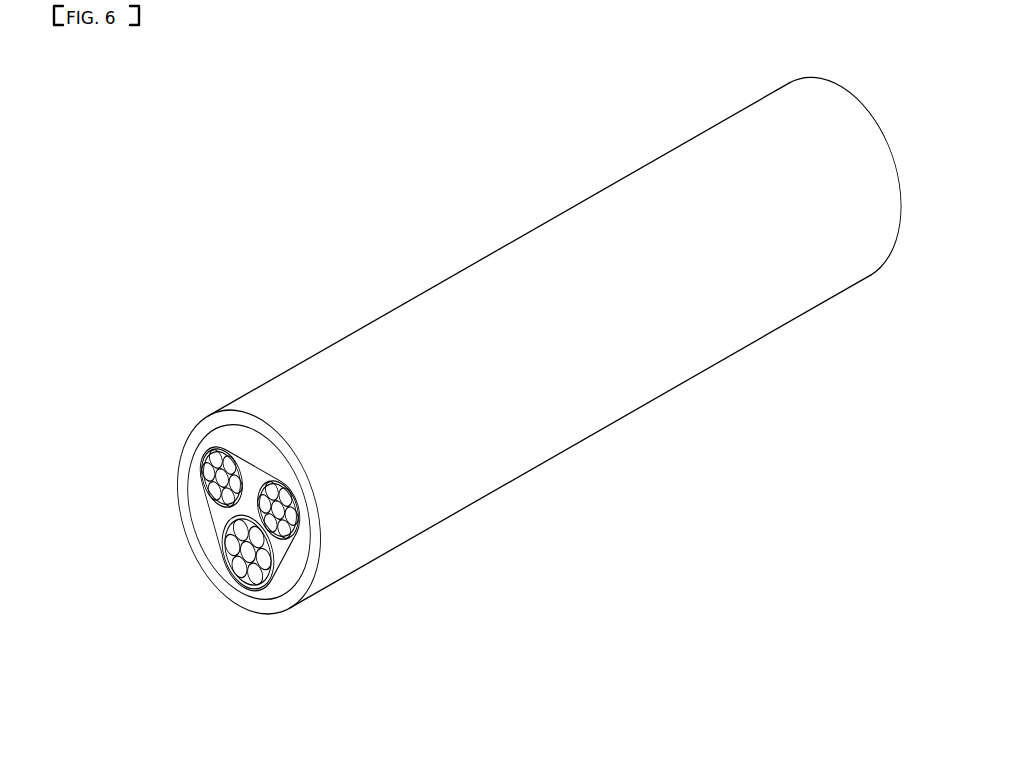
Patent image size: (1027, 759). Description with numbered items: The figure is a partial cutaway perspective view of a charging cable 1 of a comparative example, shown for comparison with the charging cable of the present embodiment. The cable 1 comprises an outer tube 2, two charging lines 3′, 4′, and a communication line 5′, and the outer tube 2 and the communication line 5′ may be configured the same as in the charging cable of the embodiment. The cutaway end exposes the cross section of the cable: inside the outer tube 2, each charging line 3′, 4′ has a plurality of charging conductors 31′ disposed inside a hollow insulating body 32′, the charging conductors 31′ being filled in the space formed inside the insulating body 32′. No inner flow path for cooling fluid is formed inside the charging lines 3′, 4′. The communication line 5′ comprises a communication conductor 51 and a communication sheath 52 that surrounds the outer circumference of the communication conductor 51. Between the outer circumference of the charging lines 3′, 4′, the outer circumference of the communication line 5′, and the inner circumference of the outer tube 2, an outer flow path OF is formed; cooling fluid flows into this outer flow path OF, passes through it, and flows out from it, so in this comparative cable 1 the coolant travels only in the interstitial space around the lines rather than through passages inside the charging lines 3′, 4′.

The cable 1 is at (470, 207).
The outer tube 2 is at (528, 457).
The charging line 3′ is at (228, 432).
The charging conductors 31′ is at (266, 488).
The insulating body 32′ is at (282, 483).
The charging line 4′ is at (320, 532).
The binder wrap 5′ is at (294, 578).
The communication conductor 51 is at (245, 570).
The communication sheath 52 is at (235, 567).
The outer flow path OF is at (205, 508).